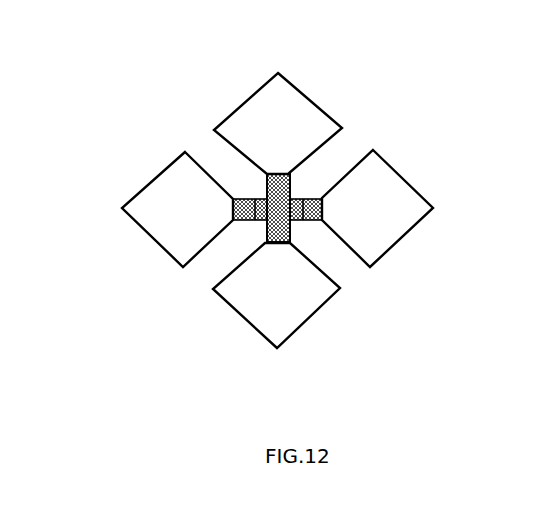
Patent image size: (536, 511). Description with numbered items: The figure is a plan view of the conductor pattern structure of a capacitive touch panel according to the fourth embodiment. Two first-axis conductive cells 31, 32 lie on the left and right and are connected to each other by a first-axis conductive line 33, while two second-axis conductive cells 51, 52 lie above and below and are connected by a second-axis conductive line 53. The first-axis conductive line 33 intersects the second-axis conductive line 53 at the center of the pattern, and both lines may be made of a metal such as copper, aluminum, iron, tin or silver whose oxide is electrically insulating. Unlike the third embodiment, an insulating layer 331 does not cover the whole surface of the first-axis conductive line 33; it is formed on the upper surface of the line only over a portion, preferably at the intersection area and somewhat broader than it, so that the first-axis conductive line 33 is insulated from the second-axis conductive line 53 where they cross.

The second-axis conductive cell 51 is at (283, 123).
The second-axis conductive cell 52 is at (268, 303).
The second-axis conductive line 53 is at (267, 187).
The first-axis conductive cell 31 is at (173, 187).
The first-axis conductive cell 32 is at (372, 210).
The first-axis conductive line 33 is at (312, 220).
The insulating layer 331 is at (255, 221).